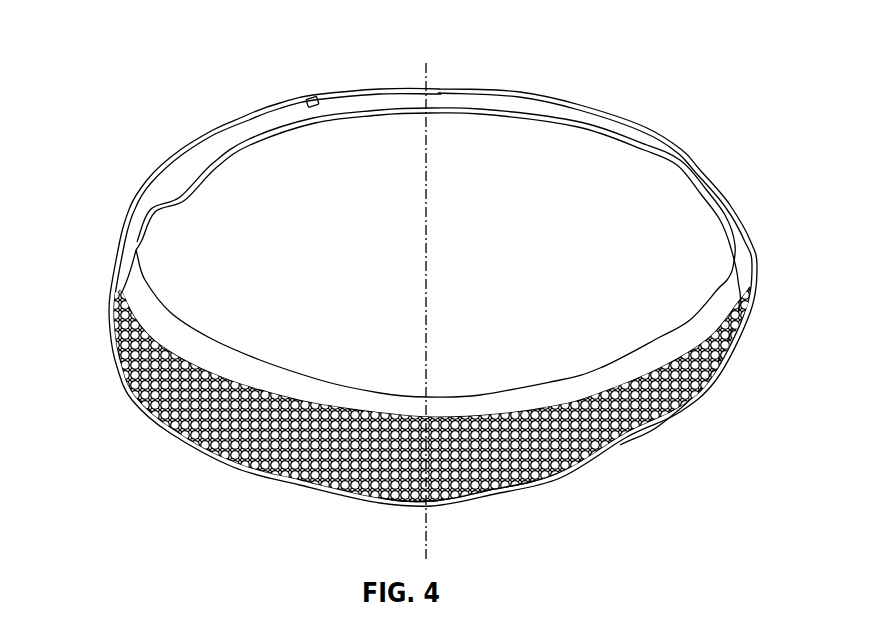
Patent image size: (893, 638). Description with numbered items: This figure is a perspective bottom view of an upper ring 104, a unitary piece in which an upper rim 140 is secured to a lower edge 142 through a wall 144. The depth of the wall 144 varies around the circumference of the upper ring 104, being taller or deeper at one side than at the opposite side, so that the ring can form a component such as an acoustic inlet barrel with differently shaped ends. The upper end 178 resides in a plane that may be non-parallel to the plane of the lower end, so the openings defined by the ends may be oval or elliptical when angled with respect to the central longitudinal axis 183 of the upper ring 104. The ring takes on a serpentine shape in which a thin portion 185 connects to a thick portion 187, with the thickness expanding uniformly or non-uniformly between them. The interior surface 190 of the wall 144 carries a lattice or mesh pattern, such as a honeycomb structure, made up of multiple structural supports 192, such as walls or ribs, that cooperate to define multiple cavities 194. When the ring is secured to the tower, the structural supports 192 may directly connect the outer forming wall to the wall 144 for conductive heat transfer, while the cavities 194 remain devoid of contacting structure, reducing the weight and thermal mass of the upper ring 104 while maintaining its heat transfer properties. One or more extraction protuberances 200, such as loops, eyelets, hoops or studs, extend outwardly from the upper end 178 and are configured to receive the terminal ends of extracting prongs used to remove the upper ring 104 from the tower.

The upper ring 104 is at (698, 86).
The upper rim 140 is at (703, 167).
The lower edge 142 is at (177, 203).
The wall 144 is at (535, 120).
The upper end 178 is at (393, 89).
The central longitudinal axis 183 is at (425, 280).
The thin portion 185 is at (678, 148).
The thick portion 187 is at (282, 473).
The interior surface 190 is at (560, 460).
The structural supports 192 is at (490, 488).
The cavities 194 is at (452, 487).
The extraction protuberances 200 is at (311, 98).